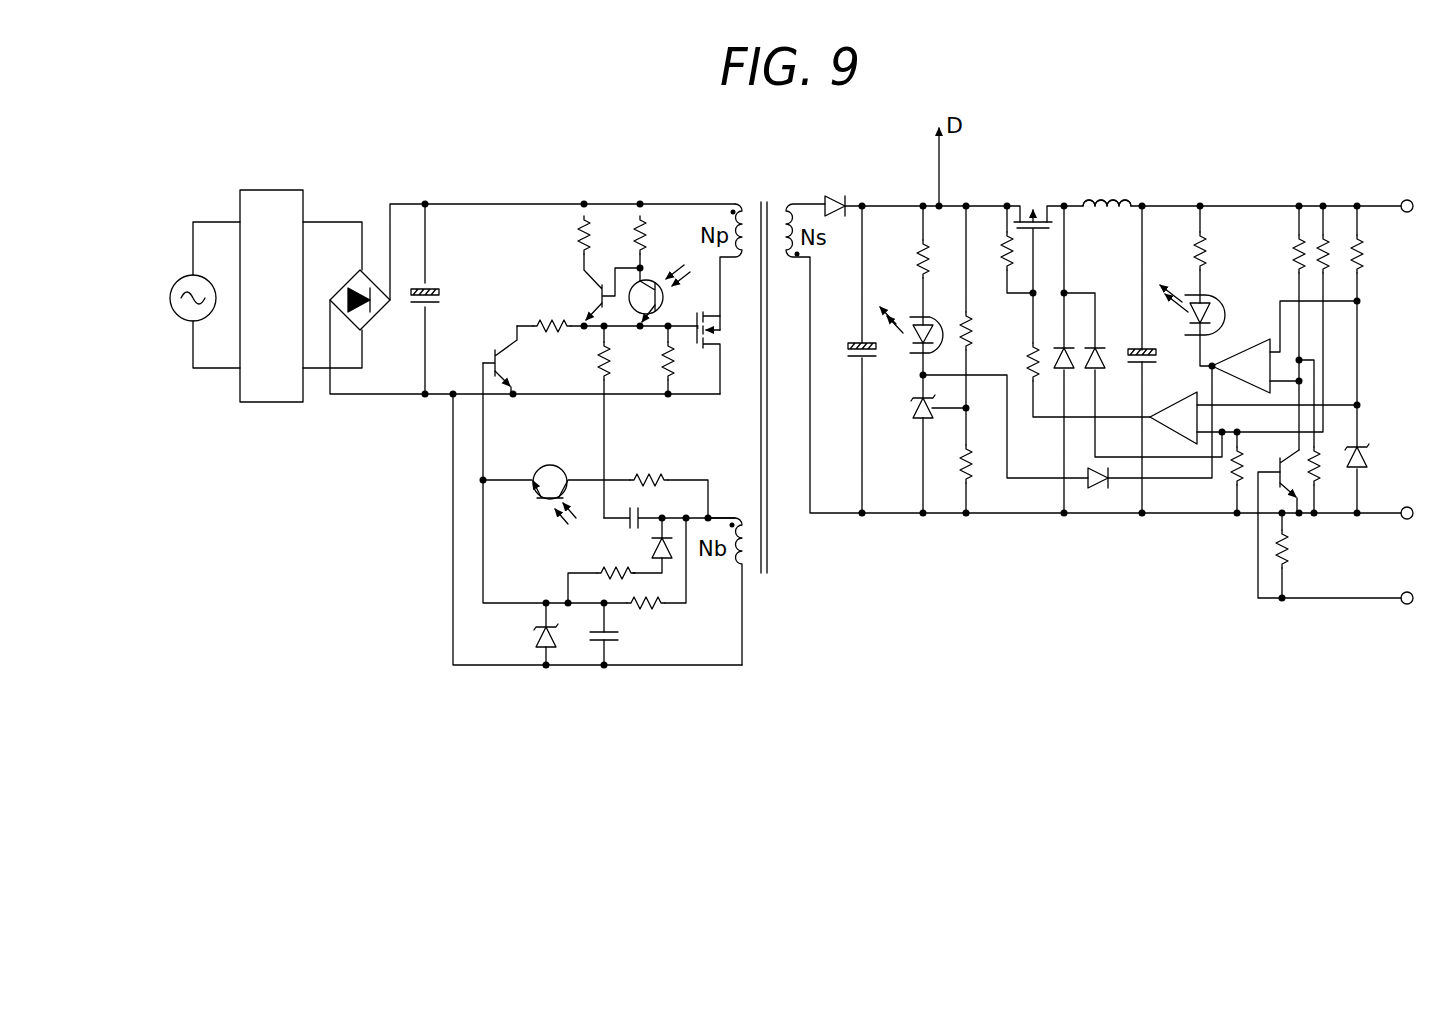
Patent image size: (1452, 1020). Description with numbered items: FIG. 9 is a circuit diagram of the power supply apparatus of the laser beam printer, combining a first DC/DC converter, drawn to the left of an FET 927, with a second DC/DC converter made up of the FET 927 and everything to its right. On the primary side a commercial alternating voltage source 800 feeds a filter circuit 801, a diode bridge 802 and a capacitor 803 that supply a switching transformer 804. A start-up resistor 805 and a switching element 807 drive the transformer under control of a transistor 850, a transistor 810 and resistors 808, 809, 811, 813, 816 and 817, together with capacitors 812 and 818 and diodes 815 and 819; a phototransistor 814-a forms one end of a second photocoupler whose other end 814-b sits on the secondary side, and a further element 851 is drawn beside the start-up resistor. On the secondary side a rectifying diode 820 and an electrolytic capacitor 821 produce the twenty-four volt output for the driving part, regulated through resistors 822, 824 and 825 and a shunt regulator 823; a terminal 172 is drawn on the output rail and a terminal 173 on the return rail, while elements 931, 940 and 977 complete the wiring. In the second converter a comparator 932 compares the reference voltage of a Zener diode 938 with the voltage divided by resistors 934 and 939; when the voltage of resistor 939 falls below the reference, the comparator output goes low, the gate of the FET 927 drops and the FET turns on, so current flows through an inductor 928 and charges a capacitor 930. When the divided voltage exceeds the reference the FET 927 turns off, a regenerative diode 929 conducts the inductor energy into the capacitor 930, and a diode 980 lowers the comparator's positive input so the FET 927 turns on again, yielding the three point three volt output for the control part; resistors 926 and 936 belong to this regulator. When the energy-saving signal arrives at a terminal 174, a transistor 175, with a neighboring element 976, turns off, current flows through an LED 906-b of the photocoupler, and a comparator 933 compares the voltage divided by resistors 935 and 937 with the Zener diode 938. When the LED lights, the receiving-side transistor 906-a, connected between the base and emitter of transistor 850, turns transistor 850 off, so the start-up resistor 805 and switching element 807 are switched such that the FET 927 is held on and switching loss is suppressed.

The commercial alternating voltage source 800 is at (180, 285).
The filter circuit 801 is at (276, 190).
The diode bridge 802 is at (375, 320).
The capacitor 803 is at (436, 290).
The switching transformer 804 is at (764, 200).
The start-up resistor 805 is at (580, 215).
The resistor 851 is at (634, 215).
The transistor on the receiving side of the photocoupler 906-a is at (650, 280).
The transistor 850 is at (578, 282).
The resistor 809 is at (540, 326).
The transistor 810 is at (493, 357).
The resistor 811 is at (596, 360).
The resistor 808 is at (684, 378).
The switching element 807 is at (722, 323).
The secondary rectifying diode 820 is at (838, 196).
The electrolytic capacitor 821 is at (856, 358).
The resistor 822 is at (915, 245).
The phototransistor 814-a is at (550, 465).
The light emitting diode of photocoupler 814-b is at (905, 365).
The shunt regulator 823 is at (917, 418).
The resistor 824 is at (992, 385).
The resistor 825 is at (958, 470).
The resistor 926 is at (1000, 235).
The main switching FET 927 is at (1034, 204).
The inductor 928 is at (1104, 196).
The regenerative diode 929 is at (1060, 395).
The diode 980 is at (1102, 345).
The resistor 931 is at (1025, 365).
The comparator 932 is at (1155, 360).
The capacitor 930 is at (1136, 366).
The diode 940 is at (1098, 490).
The resistor 977 is at (1193, 240).
The LED of the photocoupler 906-b is at (1218, 300).
The comparator 933 is at (1245, 358).
The resistor 935 is at (1290, 240).
The resistor 934 is at (1318, 240).
The resistor 936 is at (1366, 250).
The output terminal 172 is at (1407, 198).
The Zener diode 938 is at (1368, 458).
The resistor 939 is at (1230, 482).
The resistor 937 is at (1322, 482).
The transistor 175 is at (1272, 500).
The resistor 976 is at (1290, 580).
The output terminal 173 is at (1407, 522).
The terminal 174 is at (1407, 606).
The resistor 813 is at (650, 480).
The capacitor 812 is at (642, 518).
The diode 815 is at (682, 560).
The resistor 816 is at (605, 573).
The resistor 817 is at (665, 610).
The diode 819 is at (535, 630).
The capacitor 818 is at (620, 640).